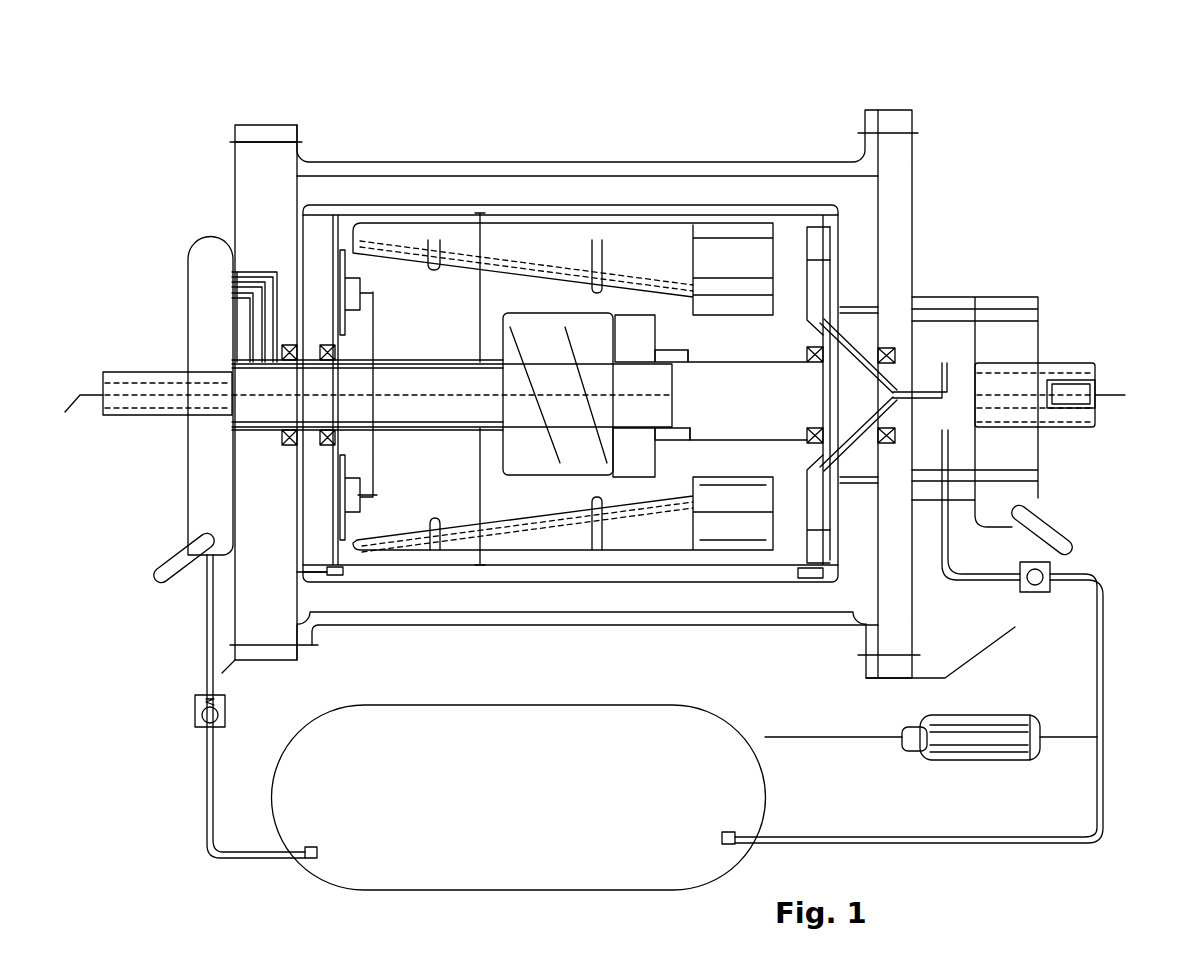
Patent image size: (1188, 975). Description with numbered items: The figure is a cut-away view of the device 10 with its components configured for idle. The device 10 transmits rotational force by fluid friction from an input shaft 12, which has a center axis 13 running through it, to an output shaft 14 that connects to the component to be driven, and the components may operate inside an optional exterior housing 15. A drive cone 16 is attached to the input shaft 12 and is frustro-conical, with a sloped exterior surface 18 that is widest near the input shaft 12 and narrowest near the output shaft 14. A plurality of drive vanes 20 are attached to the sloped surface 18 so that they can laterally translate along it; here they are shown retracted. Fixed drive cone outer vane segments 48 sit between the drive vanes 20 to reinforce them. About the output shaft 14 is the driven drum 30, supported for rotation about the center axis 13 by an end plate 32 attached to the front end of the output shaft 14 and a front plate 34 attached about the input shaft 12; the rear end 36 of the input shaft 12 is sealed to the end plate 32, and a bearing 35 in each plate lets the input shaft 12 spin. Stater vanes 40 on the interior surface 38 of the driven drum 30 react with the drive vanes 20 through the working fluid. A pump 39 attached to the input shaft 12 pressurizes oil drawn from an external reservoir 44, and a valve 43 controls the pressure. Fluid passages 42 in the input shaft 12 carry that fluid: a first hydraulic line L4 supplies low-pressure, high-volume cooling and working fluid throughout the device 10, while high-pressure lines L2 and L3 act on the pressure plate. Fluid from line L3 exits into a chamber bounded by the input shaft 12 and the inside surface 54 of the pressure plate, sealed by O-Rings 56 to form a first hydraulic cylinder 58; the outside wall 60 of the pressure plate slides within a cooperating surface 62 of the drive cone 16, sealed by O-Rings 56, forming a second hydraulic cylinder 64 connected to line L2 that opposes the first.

The device 10 is at (235, 125).
The input shaft 12 is at (165, 368).
The center axis 13 is at (1124, 398).
The output shaft 14 is at (1067, 363).
The exterior housing 15 is at (507, 167).
The drive cone 16 is at (338, 565).
The sloped exterior surface 18 is at (405, 560).
The drive vanes 20 is at (655, 565).
The driven drum 30 is at (477, 580).
The end plate 32 is at (842, 545).
The front plate 34 is at (313, 497).
The bearing 35 is at (900, 352).
The rear end 36 is at (863, 347).
The interior surface 38 is at (458, 570).
The pump 39 is at (197, 477).
The stater vanes 40 is at (660, 578).
The fluid passages 42 is at (280, 432).
The valve 43 is at (195, 703).
The reservoir 44 is at (533, 814).
The drive cone outer vane segments 48 is at (636, 540).
The inside surface 54 is at (680, 428).
The O-Rings 56 is at (703, 440).
The first hydraulic cylinder 58 is at (665, 350).
The outside wall 60 is at (630, 312).
The cooperating surface 62 is at (505, 313).
The second hydraulic cylinder 64 is at (562, 349).
The hydraulic line L2 is at (235, 293).
The hydraulic line L3 is at (237, 272).
The first hydraulic line L4 is at (262, 273).